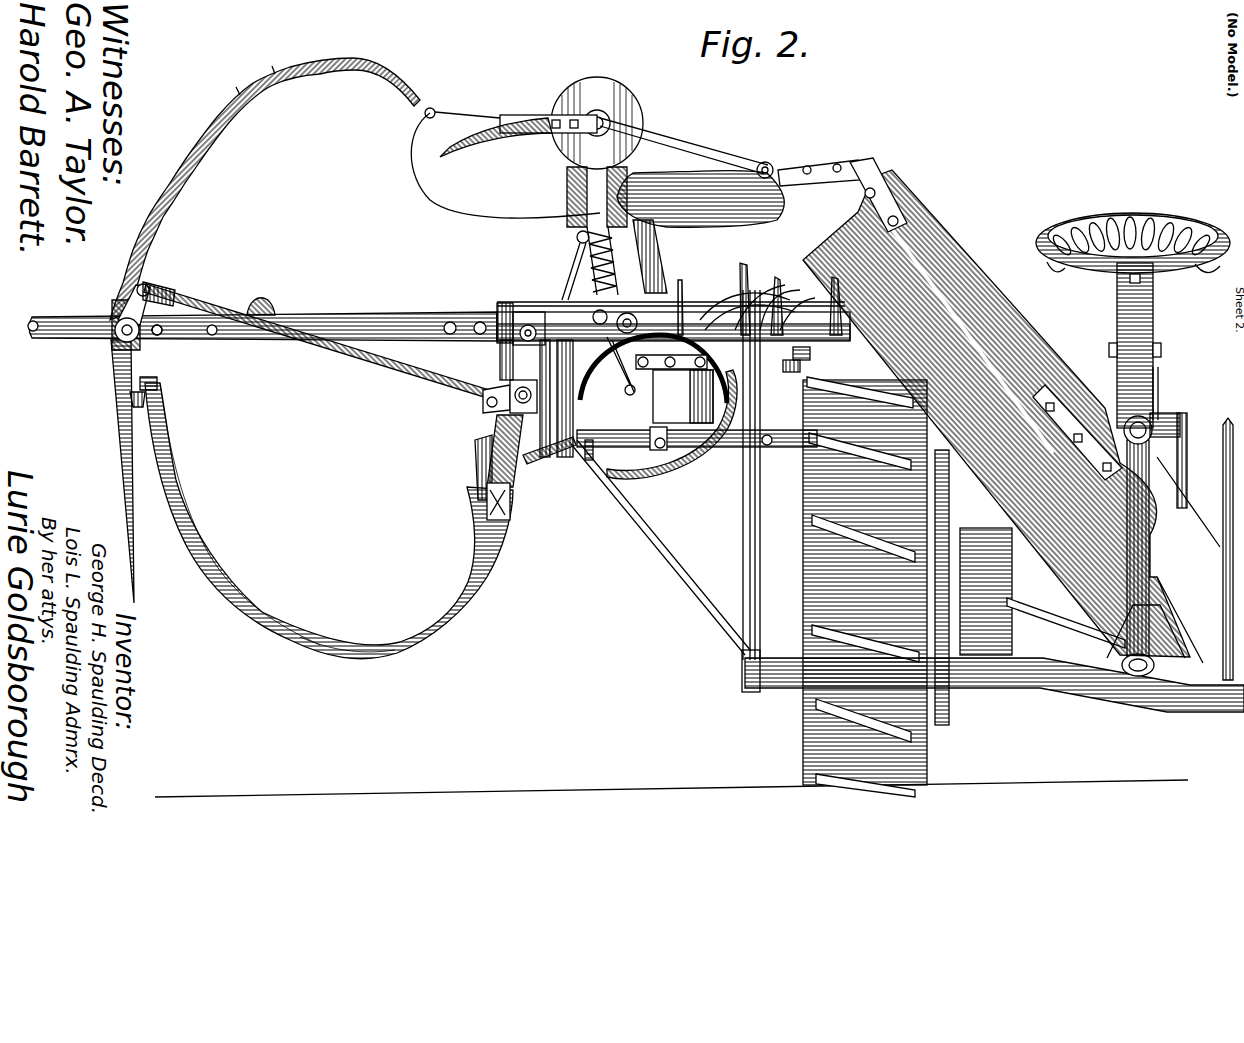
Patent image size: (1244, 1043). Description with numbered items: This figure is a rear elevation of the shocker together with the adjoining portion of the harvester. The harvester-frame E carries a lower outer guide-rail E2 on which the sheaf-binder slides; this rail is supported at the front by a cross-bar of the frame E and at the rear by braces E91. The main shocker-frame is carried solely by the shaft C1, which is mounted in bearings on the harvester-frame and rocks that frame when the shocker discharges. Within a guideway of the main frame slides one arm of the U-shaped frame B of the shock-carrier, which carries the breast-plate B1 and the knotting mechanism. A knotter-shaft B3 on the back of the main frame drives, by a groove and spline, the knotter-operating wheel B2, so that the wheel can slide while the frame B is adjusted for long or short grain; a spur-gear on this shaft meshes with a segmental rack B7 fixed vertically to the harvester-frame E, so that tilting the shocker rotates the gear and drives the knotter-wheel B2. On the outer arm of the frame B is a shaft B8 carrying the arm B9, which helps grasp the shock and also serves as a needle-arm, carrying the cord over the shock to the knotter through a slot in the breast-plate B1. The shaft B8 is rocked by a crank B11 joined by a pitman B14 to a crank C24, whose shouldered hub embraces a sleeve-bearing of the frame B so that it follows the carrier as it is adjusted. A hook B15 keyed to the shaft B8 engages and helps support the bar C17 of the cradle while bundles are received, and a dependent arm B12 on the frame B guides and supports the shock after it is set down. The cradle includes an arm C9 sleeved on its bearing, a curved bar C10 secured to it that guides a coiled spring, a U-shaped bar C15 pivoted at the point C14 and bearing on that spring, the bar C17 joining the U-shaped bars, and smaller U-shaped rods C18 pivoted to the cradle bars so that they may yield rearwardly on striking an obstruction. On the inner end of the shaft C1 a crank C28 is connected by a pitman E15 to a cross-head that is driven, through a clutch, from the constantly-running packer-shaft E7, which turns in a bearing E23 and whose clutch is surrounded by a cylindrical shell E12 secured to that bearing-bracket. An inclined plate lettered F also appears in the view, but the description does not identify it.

The sliding U-shaped frame B is at (343, 313).
The breast-plate B1 is at (487, 307).
The knotter-operating wheel B2 is at (530, 305).
The knotter-shaft B3 is at (527, 327).
The segmental rack B7 is at (570, 452).
The needle-arm shaft B8 is at (112, 320).
The needle-arm B9 is at (203, 160).
The crank B11 is at (160, 335).
The dependent arm B12 is at (130, 563).
The pitman B14 is at (347, 373).
The hook or latch B15 is at (145, 405).
The shaft C1 is at (672, 337).
The arm C9 is at (512, 495).
The curved bar C10 is at (478, 450).
The pivot points C14 is at (510, 500).
The U-shaped bar C15 is at (443, 617).
The bar C17 is at (137, 390).
The smaller U-shaped rods C18 is at (443, 530).
The crank C24 is at (510, 393).
The crank C28 is at (800, 367).
The harvester-frame E is at (607, 447).
The lower outer rail E2 is at (589, 462).
The packer-shaft E7 is at (683, 396).
The cylindrical shell E12 is at (700, 453).
The pitman E15 is at (803, 355).
The bearing-bracket E23 is at (650, 397).
The braces E91 is at (655, 545).
The inclined plate F is at (996, 407).